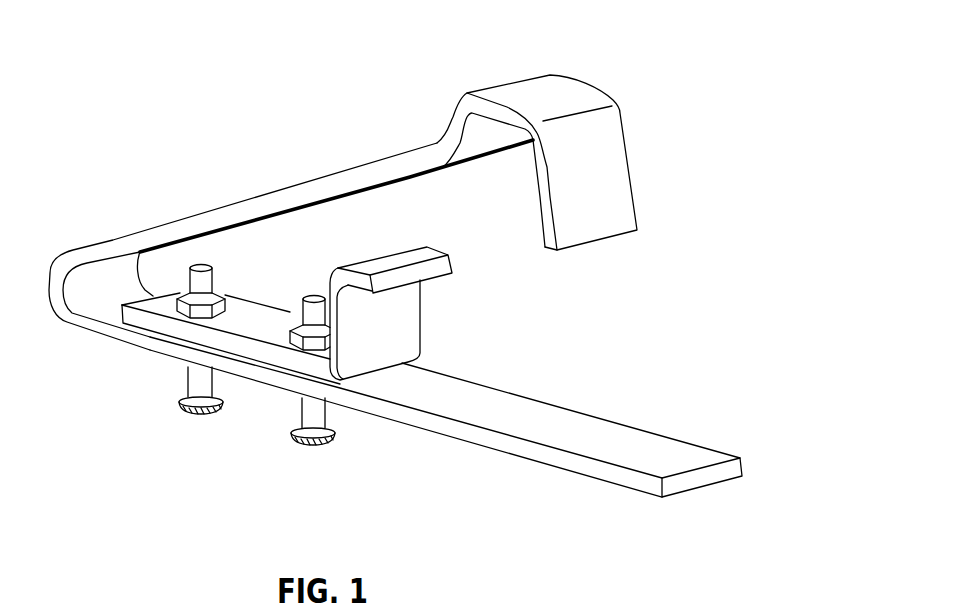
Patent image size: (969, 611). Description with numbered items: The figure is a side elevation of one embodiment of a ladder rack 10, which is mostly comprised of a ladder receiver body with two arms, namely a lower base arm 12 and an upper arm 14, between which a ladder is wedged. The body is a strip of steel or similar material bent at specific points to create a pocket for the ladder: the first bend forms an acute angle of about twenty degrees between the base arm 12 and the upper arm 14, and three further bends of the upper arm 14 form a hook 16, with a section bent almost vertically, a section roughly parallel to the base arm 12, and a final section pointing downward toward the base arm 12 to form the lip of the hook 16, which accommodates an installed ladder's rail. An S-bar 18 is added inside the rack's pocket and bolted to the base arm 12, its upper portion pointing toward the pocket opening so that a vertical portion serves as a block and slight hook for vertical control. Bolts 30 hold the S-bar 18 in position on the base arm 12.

The ladder rack 10 is at (173, 197).
The base arm 12 is at (492, 438).
The upper arm 14 is at (305, 188).
The hook 16 is at (548, 97).
The S-bar 18 is at (403, 320).
The bolts 30 is at (308, 441).